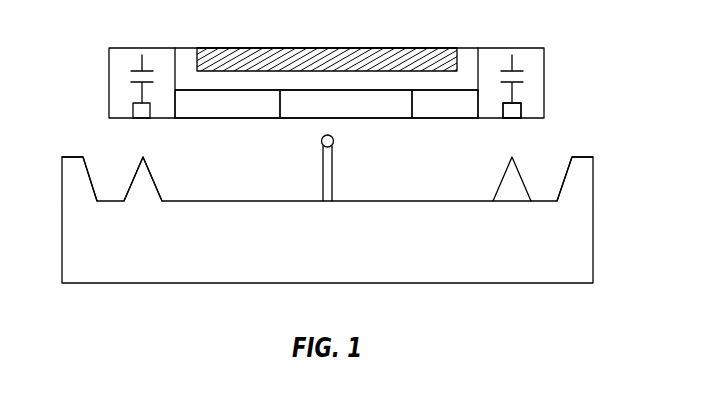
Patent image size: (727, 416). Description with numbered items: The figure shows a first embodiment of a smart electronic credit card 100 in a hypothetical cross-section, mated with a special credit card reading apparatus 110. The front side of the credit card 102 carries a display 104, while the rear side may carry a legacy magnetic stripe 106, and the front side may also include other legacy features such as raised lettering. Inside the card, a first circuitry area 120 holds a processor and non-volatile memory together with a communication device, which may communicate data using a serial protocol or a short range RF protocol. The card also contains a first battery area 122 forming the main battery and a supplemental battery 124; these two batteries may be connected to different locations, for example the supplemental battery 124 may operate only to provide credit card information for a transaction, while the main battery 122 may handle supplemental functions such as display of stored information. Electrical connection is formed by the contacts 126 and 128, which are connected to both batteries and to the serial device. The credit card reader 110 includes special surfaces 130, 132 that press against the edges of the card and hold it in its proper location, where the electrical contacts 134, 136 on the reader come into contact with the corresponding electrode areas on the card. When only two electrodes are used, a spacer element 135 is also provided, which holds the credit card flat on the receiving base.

The credit card 100 is at (312, 48).
The front side of the credit card 102 is at (226, 44).
The display 104 is at (420, 53).
The legacy magnetic stripe 106 is at (352, 118).
The credit card reading apparatus 110 is at (98, 284).
The first circuitry area 120 is at (198, 118).
The first battery area 122 is at (125, 78).
The supplemental battery 124 is at (432, 118).
The contact 126 is at (512, 118).
The contact 128 is at (142, 118).
The special surface 130 is at (567, 172).
The special surface 132 is at (92, 172).
The electrical contact 134 is at (148, 167).
The spacer element 135 is at (322, 184).
The electrical contact 136 is at (507, 168).